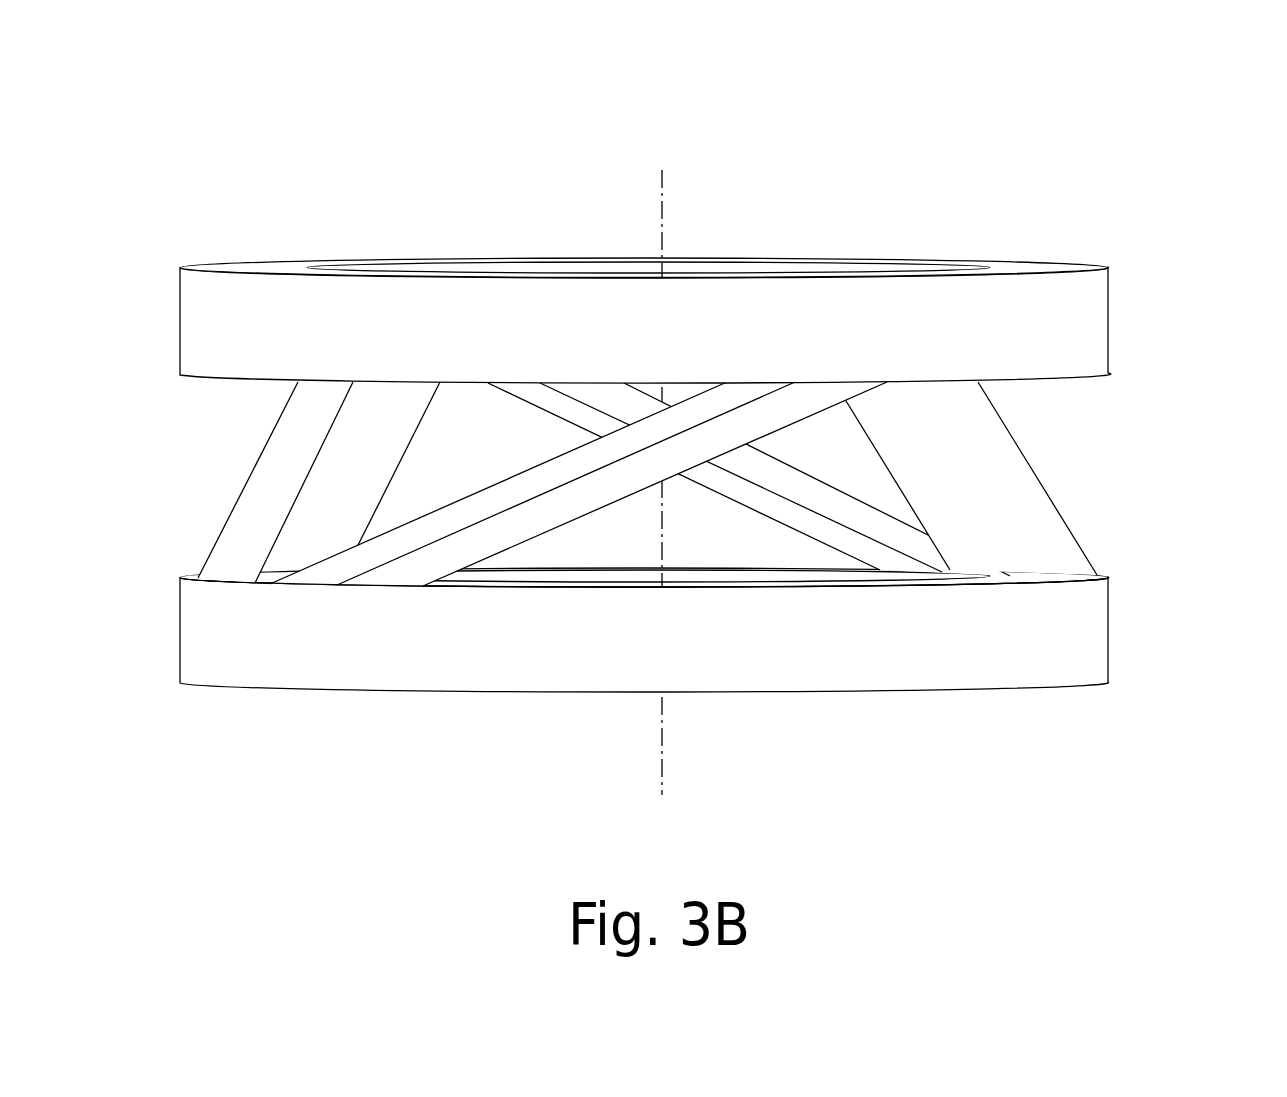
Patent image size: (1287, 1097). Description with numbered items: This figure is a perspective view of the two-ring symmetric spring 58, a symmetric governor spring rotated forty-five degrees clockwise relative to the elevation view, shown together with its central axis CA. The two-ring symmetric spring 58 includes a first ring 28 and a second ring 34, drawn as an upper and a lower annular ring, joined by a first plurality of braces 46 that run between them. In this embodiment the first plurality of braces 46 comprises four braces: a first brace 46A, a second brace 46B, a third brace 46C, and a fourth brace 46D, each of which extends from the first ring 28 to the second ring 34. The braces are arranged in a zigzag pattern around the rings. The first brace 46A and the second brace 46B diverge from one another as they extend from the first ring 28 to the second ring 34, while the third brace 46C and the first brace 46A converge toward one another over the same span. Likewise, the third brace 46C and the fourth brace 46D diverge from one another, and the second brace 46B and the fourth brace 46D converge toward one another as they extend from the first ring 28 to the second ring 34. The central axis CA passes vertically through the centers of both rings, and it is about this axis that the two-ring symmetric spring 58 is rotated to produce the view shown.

The two-ring symmetric spring 58 is at (704, 418).
The first ring 28 is at (1108, 292).
The second ring 34 is at (1108, 608).
The first plurality of braces 46 is at (1022, 447).
The first brace 46A is at (560, 502).
The second brace 46B is at (965, 500).
The third brace 46C is at (292, 458).
The fourth brace 46D is at (603, 398).
The central axis CA is at (665, 463).